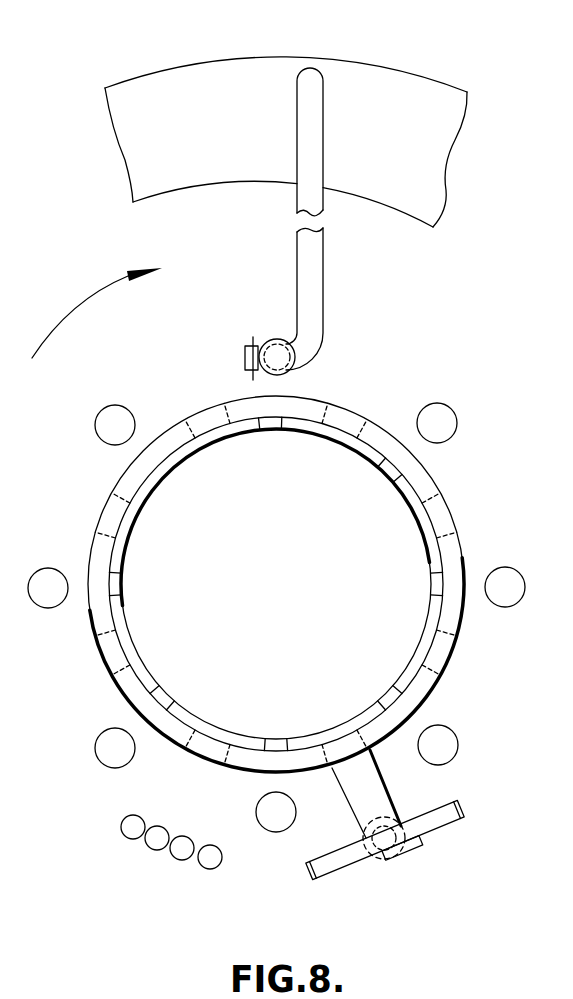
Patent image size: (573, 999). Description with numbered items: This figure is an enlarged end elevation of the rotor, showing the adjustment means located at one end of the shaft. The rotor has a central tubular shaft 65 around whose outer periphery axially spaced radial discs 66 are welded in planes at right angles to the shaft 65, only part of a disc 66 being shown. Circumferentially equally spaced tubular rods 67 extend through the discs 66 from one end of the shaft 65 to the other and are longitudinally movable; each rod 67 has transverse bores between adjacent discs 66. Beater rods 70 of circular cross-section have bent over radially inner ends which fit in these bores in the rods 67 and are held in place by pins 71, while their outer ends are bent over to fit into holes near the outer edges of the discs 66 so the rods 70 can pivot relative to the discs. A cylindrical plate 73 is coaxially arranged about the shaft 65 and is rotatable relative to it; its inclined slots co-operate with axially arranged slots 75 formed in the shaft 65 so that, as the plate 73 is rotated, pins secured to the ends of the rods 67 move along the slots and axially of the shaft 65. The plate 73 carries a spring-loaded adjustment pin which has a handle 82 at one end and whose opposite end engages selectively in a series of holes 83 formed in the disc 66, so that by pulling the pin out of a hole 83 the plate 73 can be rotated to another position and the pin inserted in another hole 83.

The central tubular shaft 65 is at (135, 525).
The radial disc 66 is at (205, 100).
The tubular rod 67 is at (277, 338).
The beater rod 70 is at (310, 260).
The pin 71 is at (245, 357).
The cylindrical plate 73 is at (98, 562).
The axial slot 75 is at (118, 590).
The handle 82 is at (435, 822).
The hole 83 is at (128, 830).